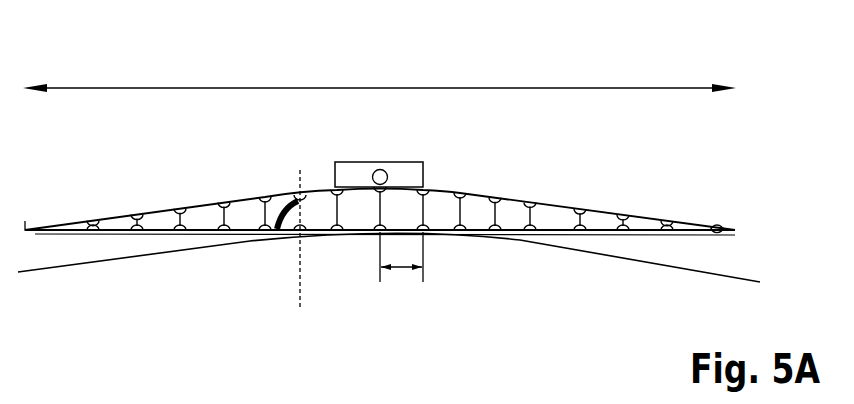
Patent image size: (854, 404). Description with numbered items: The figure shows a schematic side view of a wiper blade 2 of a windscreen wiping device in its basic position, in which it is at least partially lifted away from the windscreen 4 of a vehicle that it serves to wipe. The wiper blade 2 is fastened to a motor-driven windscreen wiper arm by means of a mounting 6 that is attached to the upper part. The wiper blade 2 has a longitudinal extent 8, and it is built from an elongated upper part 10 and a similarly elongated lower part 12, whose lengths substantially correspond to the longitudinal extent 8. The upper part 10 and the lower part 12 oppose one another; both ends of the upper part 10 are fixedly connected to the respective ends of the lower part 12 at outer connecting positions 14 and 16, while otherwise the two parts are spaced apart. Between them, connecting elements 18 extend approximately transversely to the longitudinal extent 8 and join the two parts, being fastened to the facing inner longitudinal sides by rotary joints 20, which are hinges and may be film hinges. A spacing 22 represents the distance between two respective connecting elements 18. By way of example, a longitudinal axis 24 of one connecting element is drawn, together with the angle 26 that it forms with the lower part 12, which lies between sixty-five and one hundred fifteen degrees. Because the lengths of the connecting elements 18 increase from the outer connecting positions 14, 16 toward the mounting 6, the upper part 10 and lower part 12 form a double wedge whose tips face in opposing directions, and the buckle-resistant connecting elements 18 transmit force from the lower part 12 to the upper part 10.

The wiper blade 2 is at (612, 178).
The windscreen 4 is at (654, 262).
The mounting 6 is at (410, 172).
The longitudinal extent 8 is at (379, 87).
The upper part 10 is at (200, 203).
The lower part 12 is at (557, 240).
The outer connecting position 14 is at (27, 228).
The outer connecting position 16 is at (735, 228).
The connecting elements 18 is at (256, 196).
The rotary joints 20 is at (266, 197).
The spacing 22 is at (401, 270).
The longitudinal axis 24 is at (302, 312).
The angle 26 is at (279, 232).